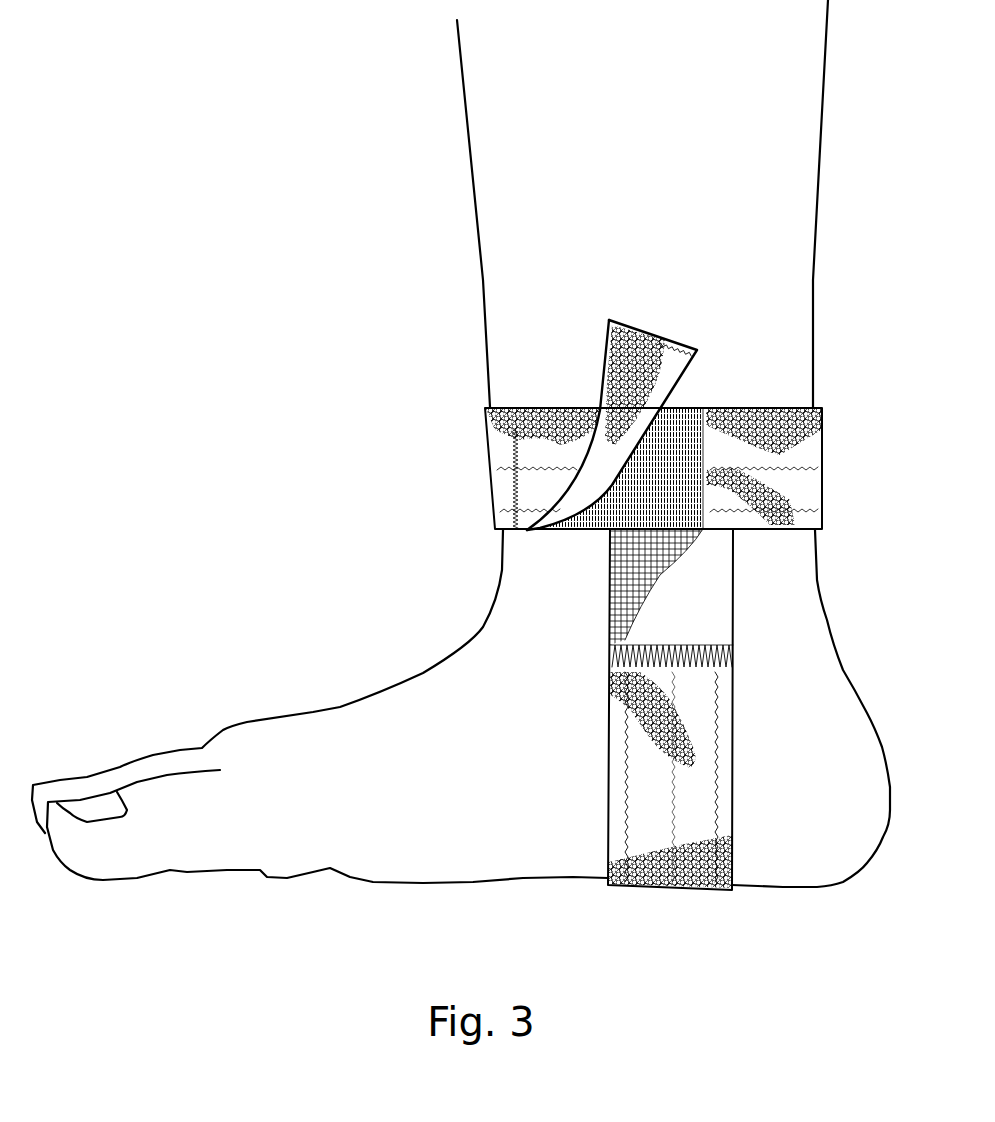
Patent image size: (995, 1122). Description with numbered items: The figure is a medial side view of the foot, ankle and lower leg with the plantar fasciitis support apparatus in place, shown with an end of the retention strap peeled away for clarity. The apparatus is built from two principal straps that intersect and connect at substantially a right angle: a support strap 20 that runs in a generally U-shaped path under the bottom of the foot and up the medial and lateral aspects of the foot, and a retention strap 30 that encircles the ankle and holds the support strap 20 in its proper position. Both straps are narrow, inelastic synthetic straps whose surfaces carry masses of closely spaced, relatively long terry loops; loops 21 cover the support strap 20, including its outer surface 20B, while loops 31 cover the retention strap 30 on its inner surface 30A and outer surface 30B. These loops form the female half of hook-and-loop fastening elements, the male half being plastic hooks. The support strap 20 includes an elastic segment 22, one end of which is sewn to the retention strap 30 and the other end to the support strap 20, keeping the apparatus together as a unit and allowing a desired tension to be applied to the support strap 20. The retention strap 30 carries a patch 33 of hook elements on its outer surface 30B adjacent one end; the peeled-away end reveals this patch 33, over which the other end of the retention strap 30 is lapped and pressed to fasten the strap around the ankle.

The support strap 20 is at (546, 888).
The outer surface of support strap 20B is at (700, 693).
The loops 21 is at (730, 863).
The elastic segment 22 is at (717, 568).
The retention strap 30 is at (832, 484).
The inner surface of retention strap 30A is at (655, 380).
The outer surface of retention strap 30B is at (808, 462).
The loops 31 is at (607, 350).
The patch of hook elements 33 is at (693, 408).